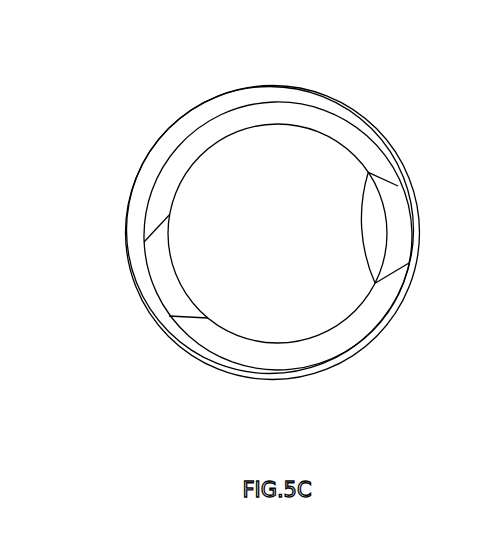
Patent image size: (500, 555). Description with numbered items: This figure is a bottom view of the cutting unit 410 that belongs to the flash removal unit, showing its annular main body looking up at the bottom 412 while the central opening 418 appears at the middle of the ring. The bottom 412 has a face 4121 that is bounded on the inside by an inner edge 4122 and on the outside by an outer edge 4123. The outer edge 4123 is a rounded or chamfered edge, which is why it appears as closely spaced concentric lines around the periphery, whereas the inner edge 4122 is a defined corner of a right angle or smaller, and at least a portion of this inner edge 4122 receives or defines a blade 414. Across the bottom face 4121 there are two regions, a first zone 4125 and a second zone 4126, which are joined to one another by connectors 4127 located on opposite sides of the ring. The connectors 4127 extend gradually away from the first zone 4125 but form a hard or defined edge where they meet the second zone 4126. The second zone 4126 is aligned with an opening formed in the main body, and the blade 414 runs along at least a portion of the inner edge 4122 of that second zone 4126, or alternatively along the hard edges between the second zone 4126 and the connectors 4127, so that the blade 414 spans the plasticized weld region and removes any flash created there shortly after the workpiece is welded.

The cutting unit 410 is at (274, 302).
The outer edge 4123 is at (130, 191).
The second zone 4126 is at (358, 126).
The bottom 412 is at (201, 338).
The face 4121 is at (348, 344).
The first zone 4125 is at (247, 356).
The blade 414 is at (218, 143).
The inner edge 4122 is at (166, 243).
The connectors 4127 is at (152, 290).
The central opening 418 is at (312, 235).